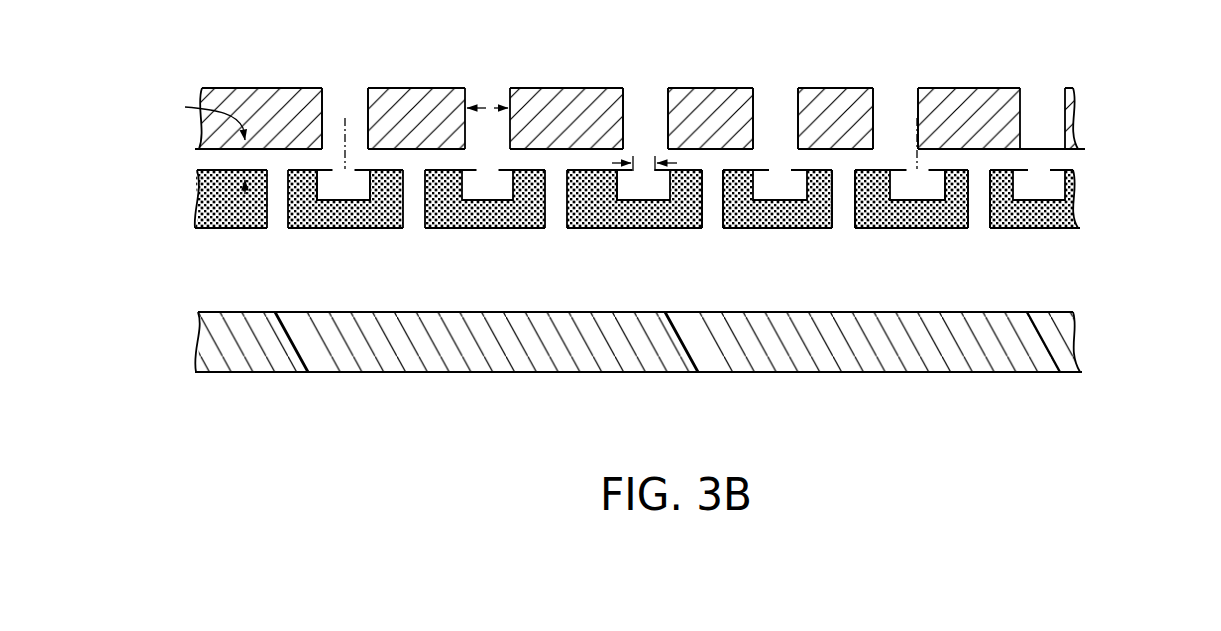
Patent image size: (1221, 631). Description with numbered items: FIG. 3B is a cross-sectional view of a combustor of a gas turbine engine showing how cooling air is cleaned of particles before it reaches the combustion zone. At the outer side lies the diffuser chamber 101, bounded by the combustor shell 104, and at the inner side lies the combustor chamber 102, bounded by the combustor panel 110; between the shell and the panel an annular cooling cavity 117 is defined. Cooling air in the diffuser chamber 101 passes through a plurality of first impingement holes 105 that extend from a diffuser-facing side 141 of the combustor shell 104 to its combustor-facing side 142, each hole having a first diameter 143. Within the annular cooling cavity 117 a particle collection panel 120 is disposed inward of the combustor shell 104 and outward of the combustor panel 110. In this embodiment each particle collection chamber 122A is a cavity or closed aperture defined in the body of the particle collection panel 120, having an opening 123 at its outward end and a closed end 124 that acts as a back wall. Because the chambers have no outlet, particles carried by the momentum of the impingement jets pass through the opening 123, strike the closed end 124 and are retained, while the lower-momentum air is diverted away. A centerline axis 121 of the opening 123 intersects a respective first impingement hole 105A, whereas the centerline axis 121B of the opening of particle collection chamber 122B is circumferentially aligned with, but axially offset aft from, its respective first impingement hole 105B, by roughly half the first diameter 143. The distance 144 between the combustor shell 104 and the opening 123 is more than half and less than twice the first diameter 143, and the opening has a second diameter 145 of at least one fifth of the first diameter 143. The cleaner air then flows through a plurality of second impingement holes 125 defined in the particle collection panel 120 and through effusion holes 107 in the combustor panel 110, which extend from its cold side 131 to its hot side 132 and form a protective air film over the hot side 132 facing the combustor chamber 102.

The diffuser chamber 101 is at (259, 46).
The combustor chamber 102 is at (304, 439).
The combustor shell 104 is at (1118, 126).
The first impingement holes 105 is at (782, 113).
The first impingement hole 105A is at (362, 107).
The first impingement hole 105B is at (908, 103).
The effusion holes 107 is at (708, 357).
The combustor panel 110 is at (698, 366).
The annular cooling cavity 117 is at (168, 202).
The particle collection panel 120 is at (1115, 202).
The centerline axis 121 is at (345, 133).
The centerline axis 121B is at (918, 157).
The particle collection chamber 122A is at (623, 197).
The particle collection chamber 122B is at (946, 192).
The opening 123 is at (332, 176).
The closed end 124 is at (352, 200).
The second impingement holes 125 is at (983, 210).
The cold side 131 is at (1048, 312).
The hot side 132 is at (1023, 372).
The diffuser-facing side 141 is at (1010, 88).
The combustor-facing side 142 is at (1072, 148).
The first diameter 143 is at (490, 108).
The distance 144 is at (196, 142).
The second diameter 145 is at (677, 163).